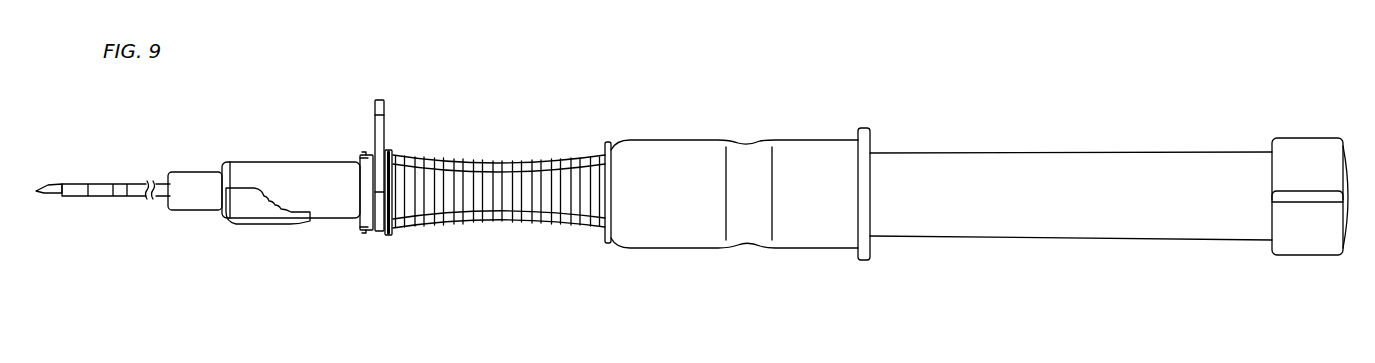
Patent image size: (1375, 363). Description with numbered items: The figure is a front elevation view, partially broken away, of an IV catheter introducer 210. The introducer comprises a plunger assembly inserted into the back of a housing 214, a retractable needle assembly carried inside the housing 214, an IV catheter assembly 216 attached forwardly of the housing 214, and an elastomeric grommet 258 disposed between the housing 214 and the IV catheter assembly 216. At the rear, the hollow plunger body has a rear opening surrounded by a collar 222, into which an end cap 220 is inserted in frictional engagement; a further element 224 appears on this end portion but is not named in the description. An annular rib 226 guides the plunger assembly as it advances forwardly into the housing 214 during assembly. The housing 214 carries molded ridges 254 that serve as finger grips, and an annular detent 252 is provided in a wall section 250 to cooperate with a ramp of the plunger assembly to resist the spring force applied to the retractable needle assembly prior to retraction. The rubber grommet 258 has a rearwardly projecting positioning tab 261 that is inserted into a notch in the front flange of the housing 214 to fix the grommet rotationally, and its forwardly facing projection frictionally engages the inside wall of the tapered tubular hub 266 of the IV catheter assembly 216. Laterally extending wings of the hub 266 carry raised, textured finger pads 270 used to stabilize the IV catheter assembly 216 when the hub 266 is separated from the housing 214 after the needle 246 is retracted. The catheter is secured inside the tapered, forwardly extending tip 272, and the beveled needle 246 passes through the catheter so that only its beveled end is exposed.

The IV catheter introducer 210 is at (1128, 106).
The housing 214 is at (738, 259).
The IV catheter assembly 216 is at (330, 236).
The end cap 220 is at (1350, 175).
The collar 222 is at (1303, 148).
The end cap lower portion 224 is at (1300, 197).
The annular rib 226 is at (866, 130).
The needle 246 is at (50, 183).
The wall section 250 is at (697, 145).
The annular detent 252 is at (750, 145).
The molded ridges 254 is at (526, 165).
The elastomeric grommet 258 is at (389, 93).
The positioning tab 261 is at (390, 150).
The hub 266 is at (323, 170).
The finger pads 270 is at (265, 193).
The tip 272 is at (198, 207).